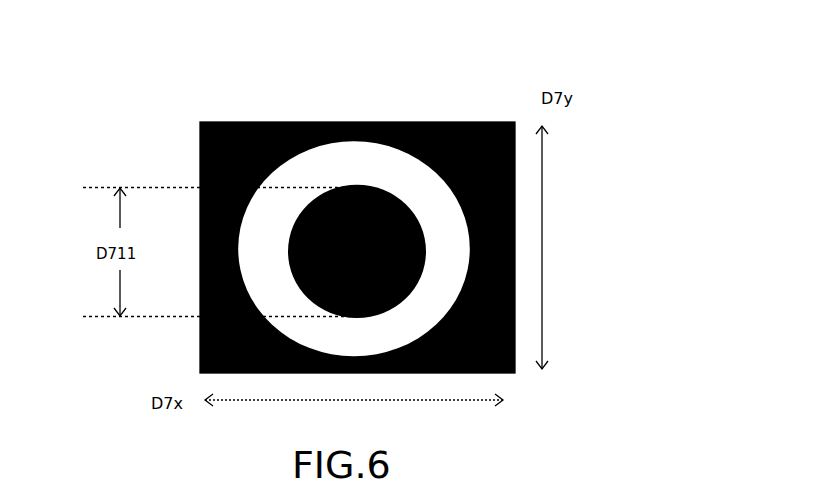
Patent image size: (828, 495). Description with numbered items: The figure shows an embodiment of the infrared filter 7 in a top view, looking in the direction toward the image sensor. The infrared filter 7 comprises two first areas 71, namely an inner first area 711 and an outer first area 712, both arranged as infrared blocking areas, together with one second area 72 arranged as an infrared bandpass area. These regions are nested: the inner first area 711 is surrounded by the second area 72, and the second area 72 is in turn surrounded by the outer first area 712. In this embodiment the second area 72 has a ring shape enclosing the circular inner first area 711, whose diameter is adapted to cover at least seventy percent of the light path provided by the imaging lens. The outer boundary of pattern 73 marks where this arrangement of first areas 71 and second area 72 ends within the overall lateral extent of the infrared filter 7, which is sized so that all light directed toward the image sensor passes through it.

The infrared filter 7 is at (453, 247).
The first areas 71 is at (357, 247).
The inner first area 711 is at (368, 265).
The outer first area 712 is at (488, 179).
The second area 72 is at (330, 168).
The outer boundary of pattern 73 is at (189, 137).